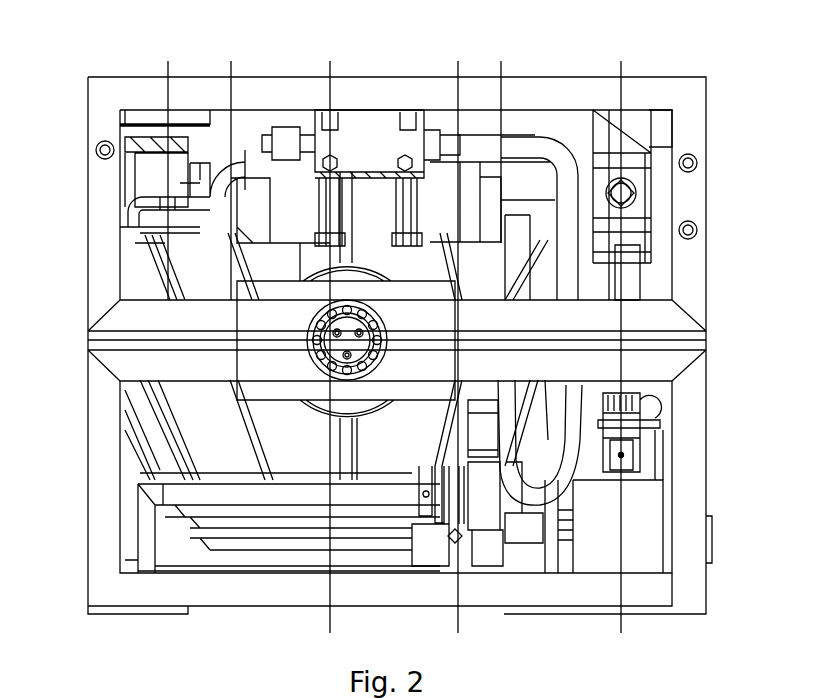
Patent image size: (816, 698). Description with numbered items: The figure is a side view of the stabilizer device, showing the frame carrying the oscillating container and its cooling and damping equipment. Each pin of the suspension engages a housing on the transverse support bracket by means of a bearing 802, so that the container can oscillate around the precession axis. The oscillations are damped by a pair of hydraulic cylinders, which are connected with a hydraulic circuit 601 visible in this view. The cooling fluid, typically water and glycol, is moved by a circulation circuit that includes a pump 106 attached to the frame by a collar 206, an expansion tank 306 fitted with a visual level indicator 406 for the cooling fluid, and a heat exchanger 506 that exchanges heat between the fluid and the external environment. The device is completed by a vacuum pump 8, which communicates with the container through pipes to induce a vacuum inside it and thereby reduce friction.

The vacuum pump 8 is at (125, 125).
The heat exchanger 506 is at (357, 143).
The expansion tank 306 is at (632, 150).
The visual level indicator 406 is at (640, 190).
The bearing 802 is at (343, 344).
The hydraulic circuit 601 is at (672, 463).
The collar 206 is at (442, 526).
The pump 106 is at (499, 556).